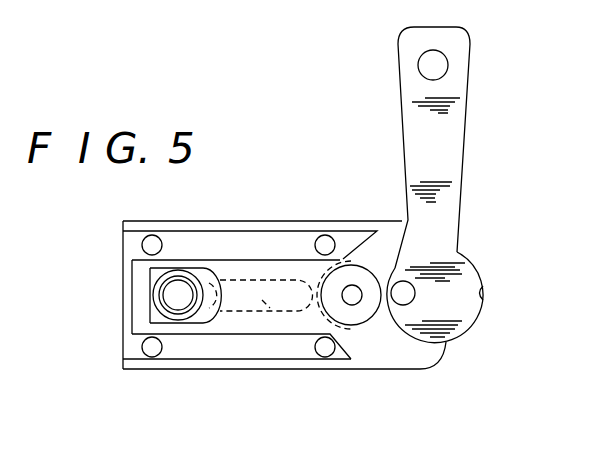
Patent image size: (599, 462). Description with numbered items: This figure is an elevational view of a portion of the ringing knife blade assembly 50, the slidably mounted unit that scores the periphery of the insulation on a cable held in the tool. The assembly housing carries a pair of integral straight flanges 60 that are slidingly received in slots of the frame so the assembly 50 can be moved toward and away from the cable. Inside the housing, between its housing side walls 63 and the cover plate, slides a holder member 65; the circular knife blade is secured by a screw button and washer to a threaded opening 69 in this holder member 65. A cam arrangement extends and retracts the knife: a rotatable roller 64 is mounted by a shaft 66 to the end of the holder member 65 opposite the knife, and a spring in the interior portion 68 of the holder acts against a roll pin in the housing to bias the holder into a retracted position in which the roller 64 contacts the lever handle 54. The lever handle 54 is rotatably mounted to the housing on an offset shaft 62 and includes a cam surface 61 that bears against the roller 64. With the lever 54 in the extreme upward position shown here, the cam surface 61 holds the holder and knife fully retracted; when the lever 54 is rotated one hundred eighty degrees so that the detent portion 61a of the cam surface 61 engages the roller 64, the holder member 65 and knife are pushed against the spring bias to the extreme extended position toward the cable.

The ringing knife blade assembly 50 is at (325, 376).
The lever handle 54 is at (457, 87).
The integral straight flanges 60 is at (252, 221).
The cam surface 61 is at (442, 345).
The detent portion 61a is at (484, 293).
The offset shaft 62 is at (415, 292).
The housing side walls 63 is at (132, 262).
The rotatable roller 64 is at (344, 272).
The holder member 65 is at (233, 268).
The shaft 66 is at (356, 298).
The interior portion 68 is at (270, 306).
The threaded opening 69 is at (170, 285).